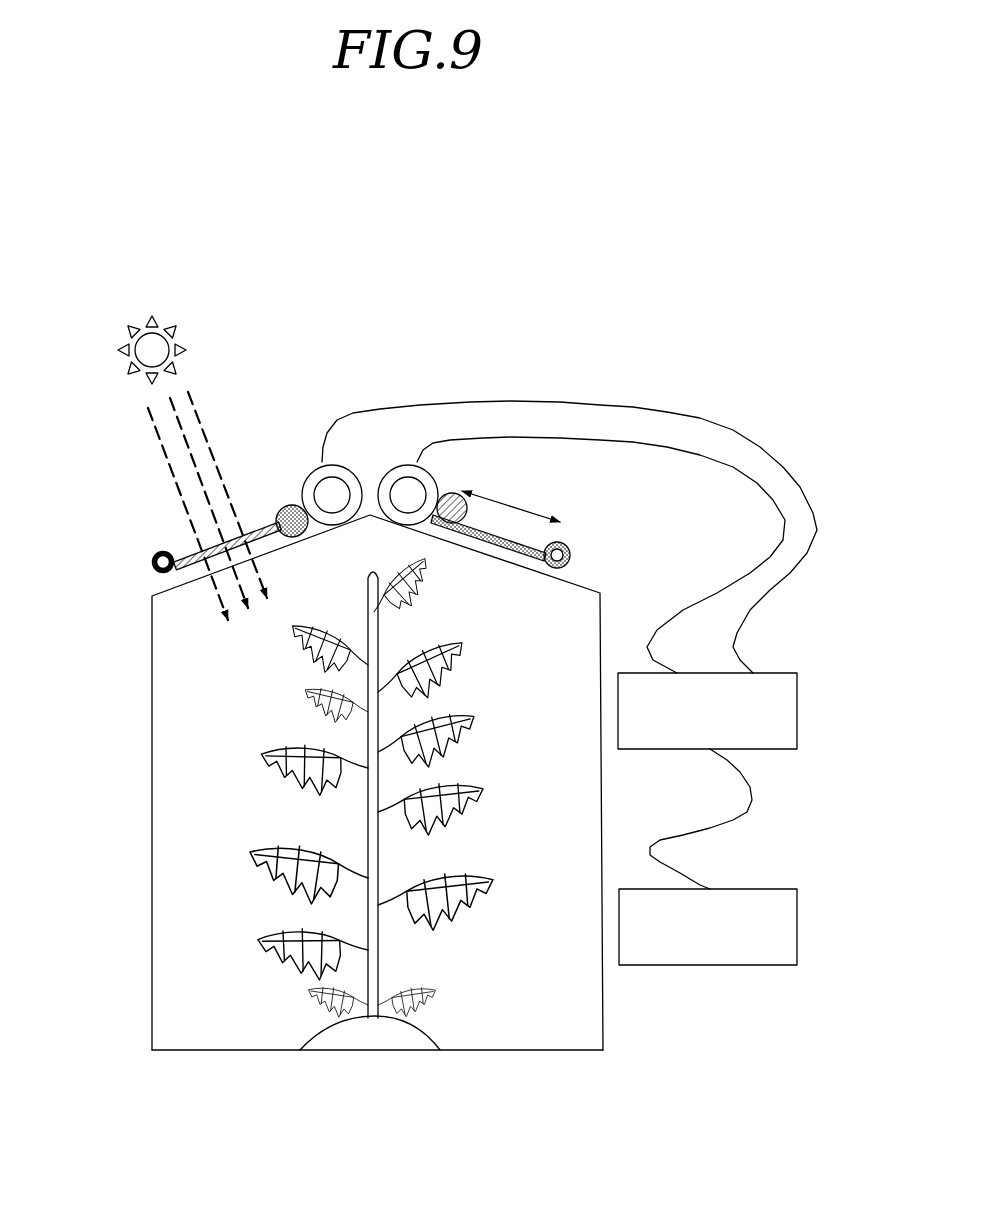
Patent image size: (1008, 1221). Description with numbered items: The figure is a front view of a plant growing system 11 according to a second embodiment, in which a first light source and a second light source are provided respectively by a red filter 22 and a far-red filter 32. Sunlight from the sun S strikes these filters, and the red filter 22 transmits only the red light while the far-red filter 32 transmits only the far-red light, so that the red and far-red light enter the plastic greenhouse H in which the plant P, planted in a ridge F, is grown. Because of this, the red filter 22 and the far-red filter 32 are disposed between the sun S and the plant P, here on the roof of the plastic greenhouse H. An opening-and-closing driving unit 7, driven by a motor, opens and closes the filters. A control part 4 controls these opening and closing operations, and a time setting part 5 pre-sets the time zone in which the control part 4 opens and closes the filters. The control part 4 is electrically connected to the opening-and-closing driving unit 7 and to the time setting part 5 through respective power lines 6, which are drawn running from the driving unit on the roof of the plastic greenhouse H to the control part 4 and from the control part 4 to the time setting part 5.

The plant growing system 11 is at (318, 254).
The opening-and-closing driving unit 7 is at (370, 421).
The red filter 22 is at (290, 506).
The far-red filter 32 is at (158, 560).
The power lines 6 is at (752, 805).
The control part 4 is at (797, 690).
The time setting part 5 is at (797, 907).
The sun S is at (147, 352).
The plant P is at (292, 755).
The plastic greenhouse H is at (152, 876).
The ridge F is at (337, 1044).